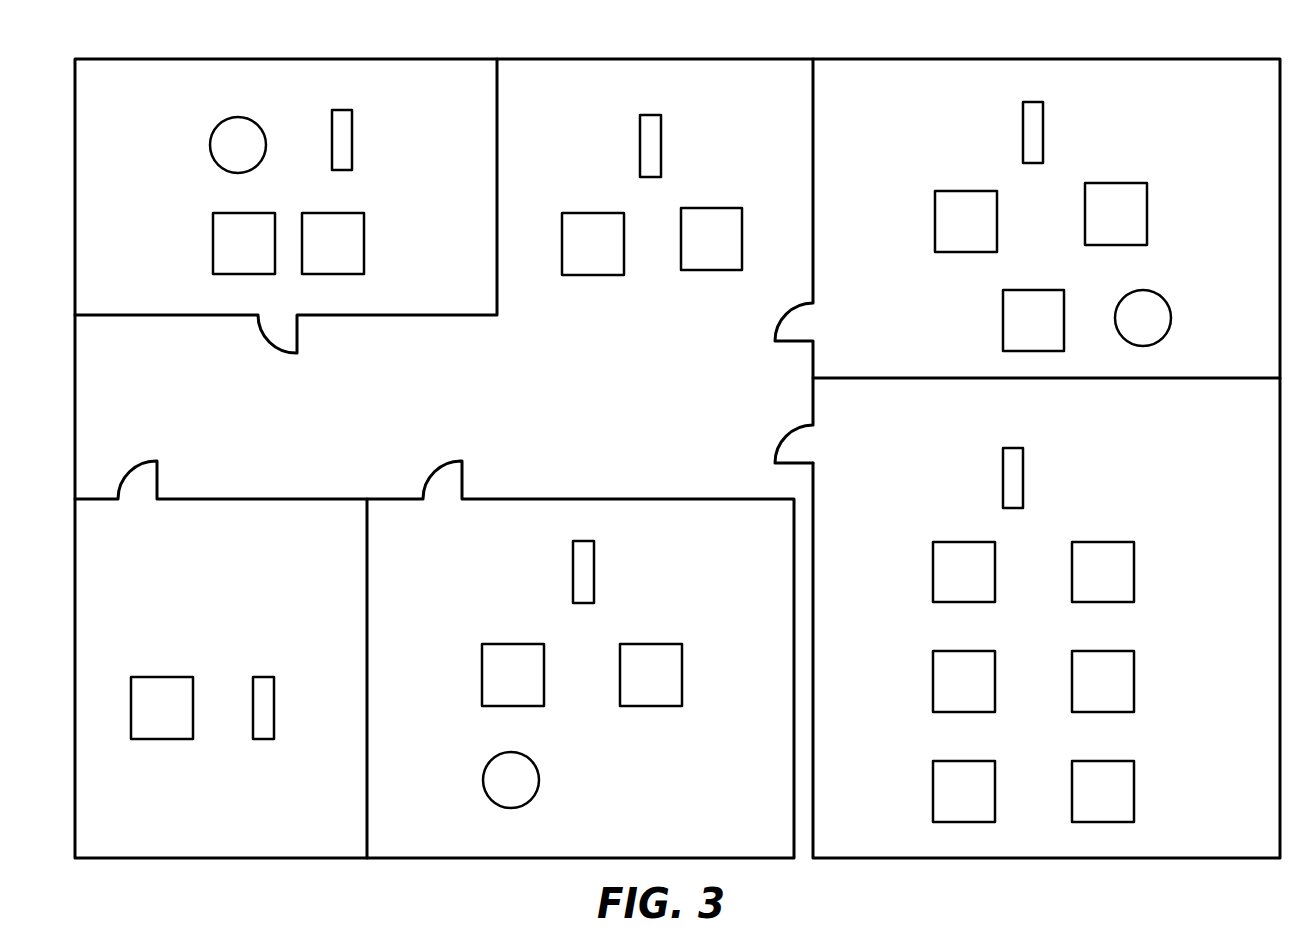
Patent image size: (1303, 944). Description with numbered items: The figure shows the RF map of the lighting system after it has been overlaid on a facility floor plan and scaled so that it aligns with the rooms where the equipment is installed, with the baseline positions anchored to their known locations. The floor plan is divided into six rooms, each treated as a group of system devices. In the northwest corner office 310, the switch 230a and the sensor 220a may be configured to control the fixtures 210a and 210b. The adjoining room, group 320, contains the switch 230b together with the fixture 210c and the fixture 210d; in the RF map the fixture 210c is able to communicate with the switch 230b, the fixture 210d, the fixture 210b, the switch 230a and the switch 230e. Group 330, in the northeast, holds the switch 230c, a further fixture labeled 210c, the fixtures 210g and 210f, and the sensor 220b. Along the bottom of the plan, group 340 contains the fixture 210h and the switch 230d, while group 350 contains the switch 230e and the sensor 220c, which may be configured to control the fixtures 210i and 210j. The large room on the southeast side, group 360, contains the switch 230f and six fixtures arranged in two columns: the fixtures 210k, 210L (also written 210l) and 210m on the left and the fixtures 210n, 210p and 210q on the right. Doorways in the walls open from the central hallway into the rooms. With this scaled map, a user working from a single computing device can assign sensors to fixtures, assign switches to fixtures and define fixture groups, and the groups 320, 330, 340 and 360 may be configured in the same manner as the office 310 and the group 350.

The northwest corner office 310 is at (167, 75).
The group 320 is at (647, 75).
The group 330 is at (1087, 75).
The group 340 is at (165, 833).
The group 350 is at (553, 832).
The group 360 is at (1010, 835).
The fixture 210a is at (213, 243).
The fixture 210b is at (364, 243).
The fixture 210c is at (593, 275).
The fixture 210d is at (710, 270).
The lighting fixture 210f is at (1003, 320).
The lighting fixture 210g is at (1147, 215).
The lighting fixture 210h is at (160, 739).
The fixture 210i is at (482, 676).
The fixture 210j is at (682, 676).
The lighting fixture 210k is at (933, 572).
The lighting fixture 210L is at (933, 680).
The lighting fixture 210l is at (921, 666).
The lighting fixture 210m is at (933, 790).
The lighting fixture 210n is at (1134, 572).
The lighting fixture 210p is at (1134, 680).
The lighting fixture 210q is at (1134, 790).
The first sensor 220a is at (212, 147).
The sensor 220b is at (1171, 318).
The sensor 220c is at (483, 782).
The switch 230a is at (352, 140).
The switch 230b is at (661, 145).
The switch 230c is at (1043, 133).
The switch 230d is at (263, 739).
The switch 230e is at (594, 572).
The switch 230f is at (1023, 478).